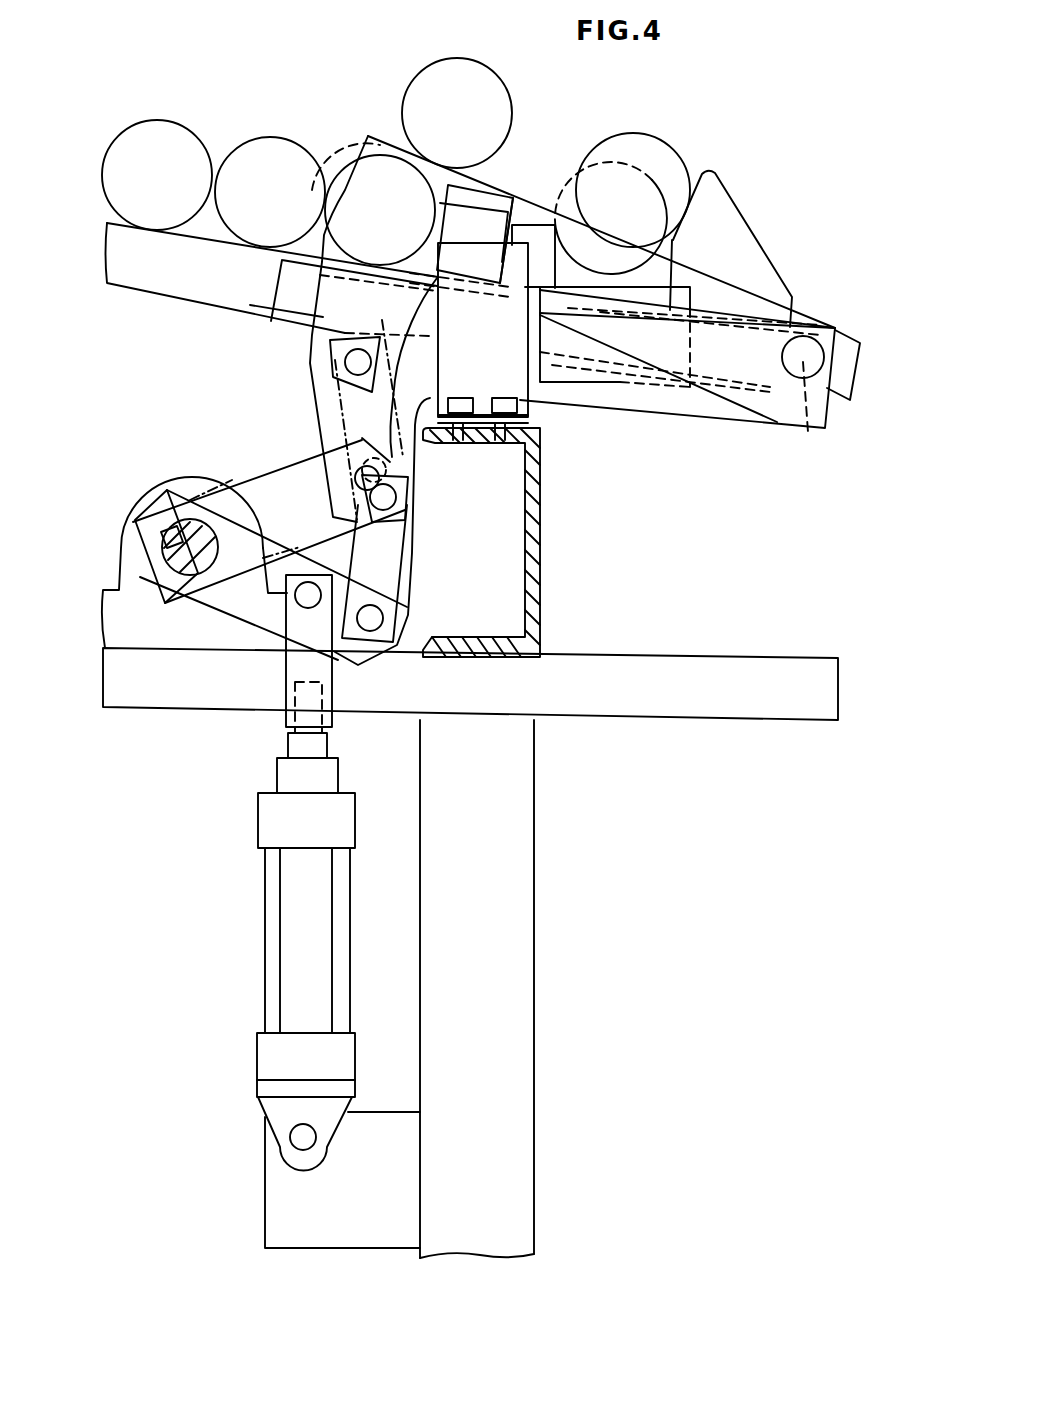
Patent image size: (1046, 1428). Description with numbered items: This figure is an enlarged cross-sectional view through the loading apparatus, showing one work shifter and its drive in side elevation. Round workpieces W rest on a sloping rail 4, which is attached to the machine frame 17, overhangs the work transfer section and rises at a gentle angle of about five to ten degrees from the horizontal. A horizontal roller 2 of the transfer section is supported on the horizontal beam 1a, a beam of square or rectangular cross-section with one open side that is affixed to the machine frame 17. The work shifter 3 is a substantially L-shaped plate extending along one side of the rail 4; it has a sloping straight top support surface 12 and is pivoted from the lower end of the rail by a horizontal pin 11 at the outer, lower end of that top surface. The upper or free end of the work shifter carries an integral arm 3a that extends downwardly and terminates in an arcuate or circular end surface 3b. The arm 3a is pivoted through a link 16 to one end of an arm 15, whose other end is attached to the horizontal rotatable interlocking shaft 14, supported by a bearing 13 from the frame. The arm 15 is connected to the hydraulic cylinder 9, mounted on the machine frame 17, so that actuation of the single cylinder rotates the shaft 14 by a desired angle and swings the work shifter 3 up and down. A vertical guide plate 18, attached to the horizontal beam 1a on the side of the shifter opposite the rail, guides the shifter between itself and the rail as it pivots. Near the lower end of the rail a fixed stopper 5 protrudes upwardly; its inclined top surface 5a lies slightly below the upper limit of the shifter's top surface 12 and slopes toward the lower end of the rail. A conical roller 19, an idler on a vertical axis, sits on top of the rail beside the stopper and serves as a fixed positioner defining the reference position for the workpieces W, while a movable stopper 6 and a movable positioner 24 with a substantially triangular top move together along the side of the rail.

The workpiece W is at (337, 173).
The horizontal beam 1a is at (543, 582).
The horizontal roller 2 is at (692, 297).
The work shifter 3 is at (608, 358).
The arm 3a is at (362, 442).
The arcuate end surface 3b is at (310, 392).
The sloping rail 4 is at (188, 273).
The fixed stopper 5 is at (452, 217).
The top surface of fixed stopper 5a is at (473, 203).
The movable stopper 6 is at (538, 242).
The hydraulic cylinder 9 is at (258, 917).
The horizontal pin 11 is at (803, 362).
The top support surface 12 is at (560, 235).
The bearing 13 is at (190, 482).
The interlocking shaft 14 is at (193, 562).
The arm 15 is at (270, 613).
The link 16 is at (380, 556).
The machine frame 17 is at (548, 962).
The vertical guide plate 18 is at (500, 368).
The conical roller 19 is at (537, 225).
The movable positioner 24 is at (703, 210).